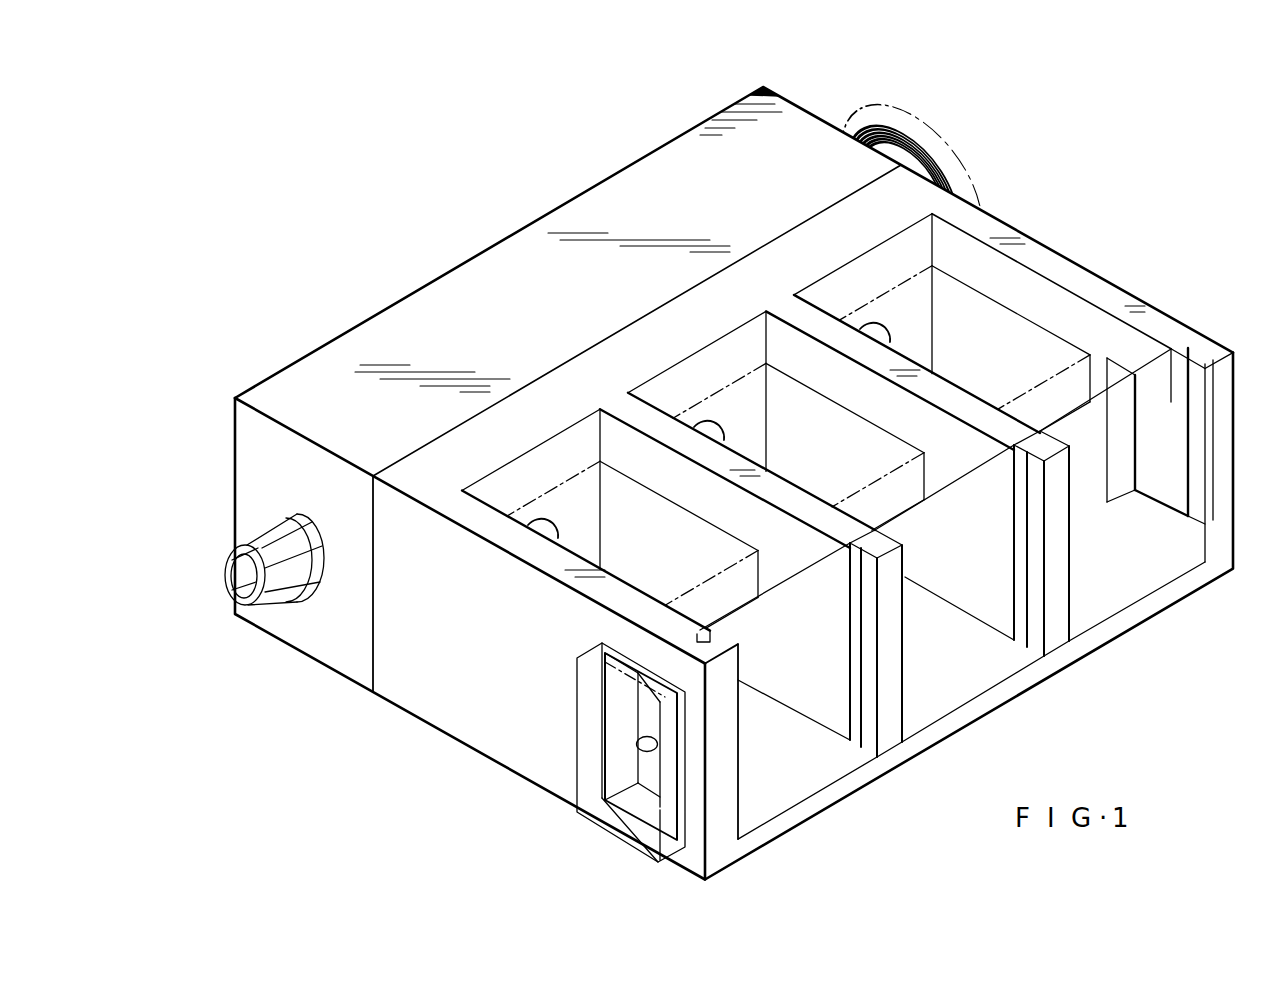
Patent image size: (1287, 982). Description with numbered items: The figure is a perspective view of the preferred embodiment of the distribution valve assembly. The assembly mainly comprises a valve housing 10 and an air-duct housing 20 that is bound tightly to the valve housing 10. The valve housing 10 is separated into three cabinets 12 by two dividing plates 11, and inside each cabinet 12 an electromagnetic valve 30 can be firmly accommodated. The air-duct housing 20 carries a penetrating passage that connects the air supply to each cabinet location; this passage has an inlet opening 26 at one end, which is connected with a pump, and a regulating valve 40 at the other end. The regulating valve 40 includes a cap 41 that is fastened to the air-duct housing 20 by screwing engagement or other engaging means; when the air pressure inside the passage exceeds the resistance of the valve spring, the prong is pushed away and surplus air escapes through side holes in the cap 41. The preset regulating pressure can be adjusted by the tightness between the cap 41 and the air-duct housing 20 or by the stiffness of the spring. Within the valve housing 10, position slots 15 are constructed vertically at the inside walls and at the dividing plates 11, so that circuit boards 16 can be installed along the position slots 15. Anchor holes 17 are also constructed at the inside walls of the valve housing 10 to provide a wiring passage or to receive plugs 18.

The valve housing 10 is at (1095, 262).
The dividing plate 11 is at (788, 490).
The cabinet 12 is at (615, 428).
The position slot 15 is at (856, 653).
The circuit board 16 is at (1158, 425).
The anchor hole 17 is at (1162, 478).
The plug 18 is at (572, 738).
The air-duct housing 20 is at (500, 264).
The inlet opening 26 is at (248, 608).
The electromagnetic valve 30 is at (893, 440).
The regulating valve 40 is at (950, 128).
The cap 41 is at (862, 115).